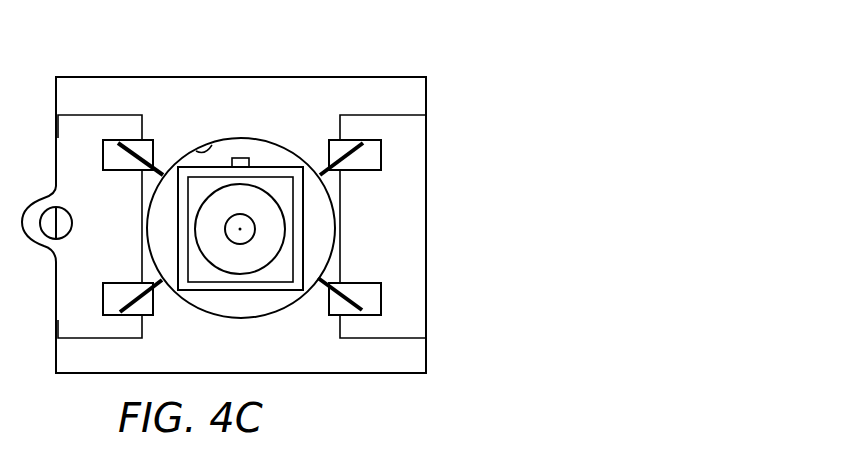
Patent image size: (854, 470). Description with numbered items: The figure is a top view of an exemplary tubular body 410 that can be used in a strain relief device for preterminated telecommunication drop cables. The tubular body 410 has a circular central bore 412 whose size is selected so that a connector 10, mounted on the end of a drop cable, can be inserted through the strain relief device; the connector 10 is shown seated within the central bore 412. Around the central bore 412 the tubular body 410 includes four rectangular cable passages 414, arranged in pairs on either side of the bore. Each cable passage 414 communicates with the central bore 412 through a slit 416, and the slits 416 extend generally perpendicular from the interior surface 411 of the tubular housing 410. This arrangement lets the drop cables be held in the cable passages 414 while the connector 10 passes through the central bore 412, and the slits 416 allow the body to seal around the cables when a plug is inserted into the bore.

The connector 10 is at (270, 168).
The tubular body 410 is at (426, 95).
The interior surface 411 is at (196, 151).
The central bore 412 is at (320, 225).
The cable passages 414 is at (370, 153).
The slits 416 is at (328, 172).